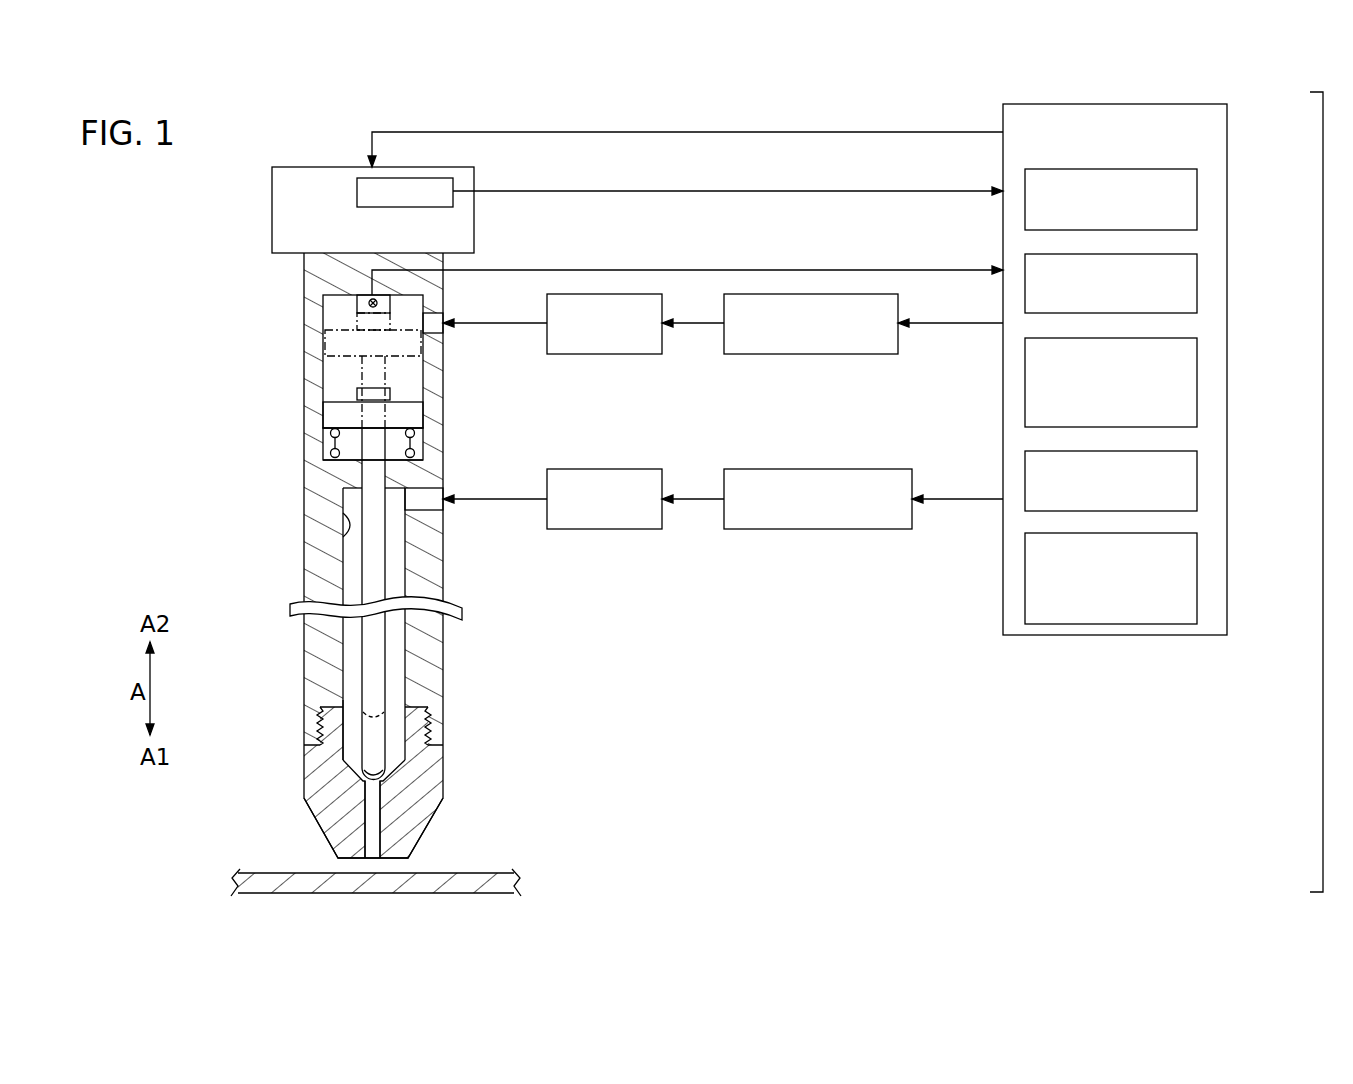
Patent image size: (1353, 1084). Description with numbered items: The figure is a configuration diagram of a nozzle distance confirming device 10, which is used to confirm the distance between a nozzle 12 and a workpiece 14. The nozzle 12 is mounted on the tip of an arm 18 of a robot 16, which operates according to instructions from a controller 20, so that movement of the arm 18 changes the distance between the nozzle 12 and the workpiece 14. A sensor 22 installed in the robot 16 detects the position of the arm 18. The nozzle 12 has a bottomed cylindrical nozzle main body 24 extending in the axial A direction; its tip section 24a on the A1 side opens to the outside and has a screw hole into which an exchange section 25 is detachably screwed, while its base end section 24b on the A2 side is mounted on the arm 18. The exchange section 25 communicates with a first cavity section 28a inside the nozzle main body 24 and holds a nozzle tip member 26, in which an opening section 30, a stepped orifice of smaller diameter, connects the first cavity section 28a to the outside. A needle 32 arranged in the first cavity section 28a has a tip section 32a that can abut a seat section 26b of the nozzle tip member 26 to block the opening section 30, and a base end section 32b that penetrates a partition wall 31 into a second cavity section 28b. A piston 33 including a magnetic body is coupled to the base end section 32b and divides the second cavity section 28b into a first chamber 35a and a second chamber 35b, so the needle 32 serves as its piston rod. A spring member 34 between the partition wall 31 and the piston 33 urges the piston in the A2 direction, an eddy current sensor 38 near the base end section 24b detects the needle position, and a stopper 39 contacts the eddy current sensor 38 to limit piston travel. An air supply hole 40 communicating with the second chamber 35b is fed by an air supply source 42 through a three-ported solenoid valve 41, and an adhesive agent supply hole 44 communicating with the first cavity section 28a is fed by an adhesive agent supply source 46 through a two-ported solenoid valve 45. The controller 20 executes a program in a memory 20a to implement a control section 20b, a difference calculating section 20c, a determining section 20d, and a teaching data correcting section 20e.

The nozzle distance confirming device 10 is at (104, 243).
The nozzle 12 is at (304, 466).
The workpiece 14 is at (258, 878).
The robot 16 is at (332, 167).
The arm 18 is at (373, 210).
The controller 20 is at (1227, 130).
The memory 20a is at (1197, 201).
The control section 20b is at (1197, 284).
The difference calculating section 20c is at (1197, 369).
The determining section 20d is at (1197, 482).
The teaching data correcting section 20e is at (1197, 566).
The sensor 22 is at (357, 192).
The nozzle main body 24 is at (428, 668).
The tip section 24a is at (446, 706).
The base end section 24b is at (340, 273).
The exchange section 25 is at (443, 798).
The nozzle tip member 26 is at (342, 773).
The seat section 26b is at (428, 741).
The first cavity section 28a is at (345, 545).
The second cavity section 28b is at (323, 373).
The opening section 30 is at (372, 835).
The partition wall 31 is at (352, 481).
The needle 32 is at (372, 651).
The tip section 32a is at (372, 784).
The base end section 32b is at (425, 460).
The piston 33 is at (325, 418).
The spring member 34 is at (418, 430).
The first chamber 35a is at (392, 441).
The second chamber 35b is at (400, 372).
The eddy current sensor 38 is at (358, 303).
The stopper 39 is at (357, 394).
The air supply hole 40 is at (436, 322).
The solenoid valve 41 is at (588, 354).
The air supply source 42 is at (810, 354).
The adhesive agent supply hole 44 is at (432, 500).
The solenoid valve 45 is at (598, 469).
The adhesive agent supply source 46 is at (801, 469).